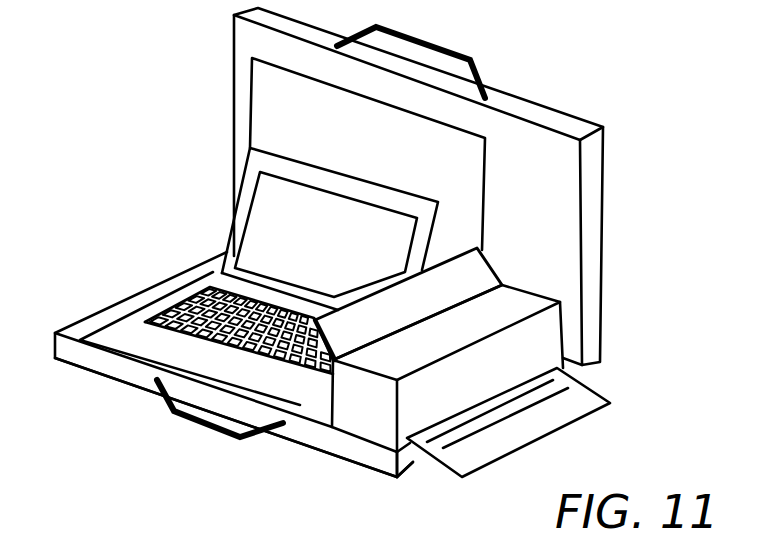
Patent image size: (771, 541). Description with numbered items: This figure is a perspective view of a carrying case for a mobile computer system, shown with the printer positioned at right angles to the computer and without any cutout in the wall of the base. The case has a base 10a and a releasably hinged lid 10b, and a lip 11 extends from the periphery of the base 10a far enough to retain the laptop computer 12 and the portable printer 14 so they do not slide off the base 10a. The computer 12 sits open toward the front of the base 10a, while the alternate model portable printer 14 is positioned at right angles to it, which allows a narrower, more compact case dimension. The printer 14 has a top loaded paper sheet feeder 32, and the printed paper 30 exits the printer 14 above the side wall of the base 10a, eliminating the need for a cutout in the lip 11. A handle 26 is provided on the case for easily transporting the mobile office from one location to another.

The base 10a is at (413, 460).
The lid 10b is at (592, 192).
The lip 11 is at (87, 358).
The laptop computer 12 is at (152, 345).
The portable printer 14 is at (540, 338).
The handle 26 is at (440, 44).
The paper 30 is at (550, 410).
The paper sheet feeder 32 is at (331, 378).